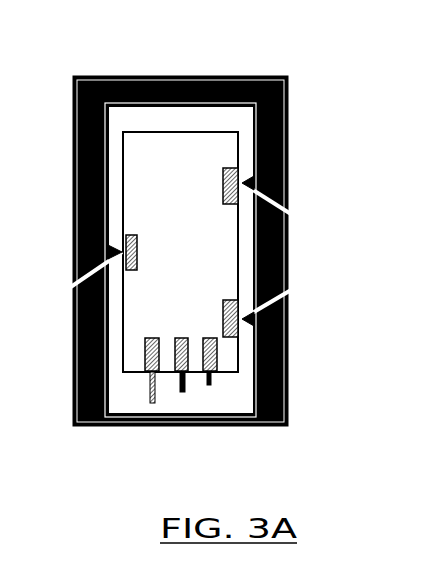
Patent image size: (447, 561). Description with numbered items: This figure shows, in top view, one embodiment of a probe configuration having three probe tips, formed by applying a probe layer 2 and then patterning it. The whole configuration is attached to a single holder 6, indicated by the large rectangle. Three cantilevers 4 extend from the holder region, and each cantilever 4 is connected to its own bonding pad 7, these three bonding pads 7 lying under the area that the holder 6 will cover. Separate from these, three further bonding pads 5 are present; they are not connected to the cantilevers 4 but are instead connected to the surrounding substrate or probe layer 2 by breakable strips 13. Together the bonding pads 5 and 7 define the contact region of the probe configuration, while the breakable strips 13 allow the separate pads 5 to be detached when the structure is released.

The probe layer 2 is at (277, 100).
The holder 6 is at (170, 134).
The breakable strips 13 is at (242, 183).
The bonding pads 5 is at (228, 302).
The bonding pads 7 is at (207, 340).
The cantilevers 4 is at (153, 402).